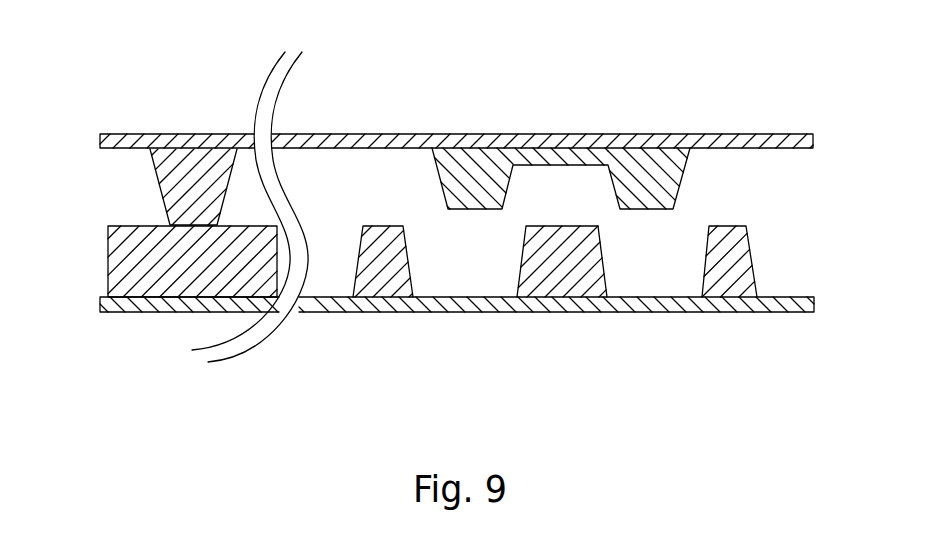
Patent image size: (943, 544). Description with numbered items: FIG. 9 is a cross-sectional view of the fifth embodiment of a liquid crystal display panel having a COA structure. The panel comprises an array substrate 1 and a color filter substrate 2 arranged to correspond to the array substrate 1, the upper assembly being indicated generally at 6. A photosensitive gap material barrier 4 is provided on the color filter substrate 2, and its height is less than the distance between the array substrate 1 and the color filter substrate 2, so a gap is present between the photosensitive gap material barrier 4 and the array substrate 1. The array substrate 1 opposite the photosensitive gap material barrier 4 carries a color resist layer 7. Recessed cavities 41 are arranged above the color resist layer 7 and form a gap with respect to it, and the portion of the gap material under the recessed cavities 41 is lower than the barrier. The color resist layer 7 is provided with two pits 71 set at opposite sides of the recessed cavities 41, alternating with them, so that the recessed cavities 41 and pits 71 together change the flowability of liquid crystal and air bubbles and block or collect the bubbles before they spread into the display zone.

The array substrate 1 is at (168, 307).
The color filter substrate 2 is at (775, 142).
The photosensitive gap material barrier 4 is at (465, 187).
The recessed cavities 41 is at (552, 188).
The upper assembly 6 is at (109, 94).
The color resist layer 7 is at (737, 272).
The pits 71 is at (436, 260).